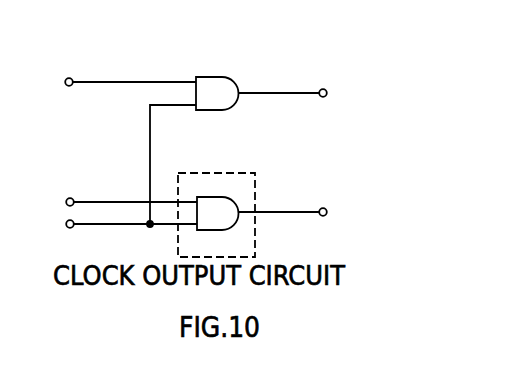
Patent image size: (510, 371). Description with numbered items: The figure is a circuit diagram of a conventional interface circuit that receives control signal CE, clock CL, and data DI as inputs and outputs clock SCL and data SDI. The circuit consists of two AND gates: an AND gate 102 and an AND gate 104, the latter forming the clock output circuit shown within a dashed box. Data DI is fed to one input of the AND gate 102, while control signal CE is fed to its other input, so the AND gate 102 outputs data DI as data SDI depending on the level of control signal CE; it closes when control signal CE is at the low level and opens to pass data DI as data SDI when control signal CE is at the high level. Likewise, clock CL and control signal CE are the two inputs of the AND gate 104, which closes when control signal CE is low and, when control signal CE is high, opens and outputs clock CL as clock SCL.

The AND gate 102 is at (222, 77).
The AND gate 104 is at (217, 197).
The data DI is at (113, 83).
The clock CL is at (115, 202).
The control signal CE is at (115, 171).
The data SDI is at (305, 95).
The clock SCL is at (308, 214).